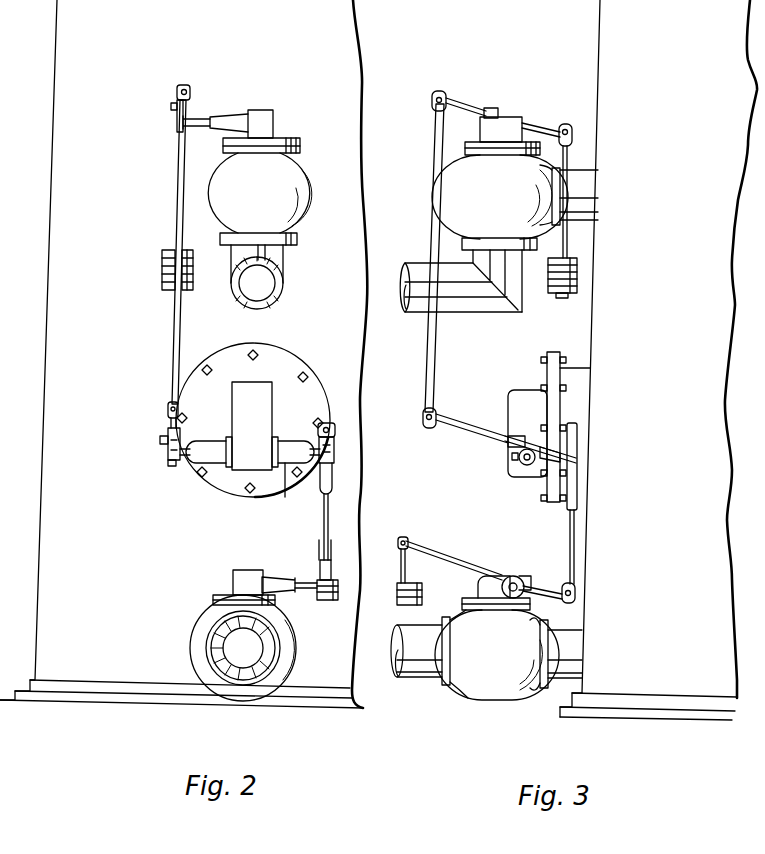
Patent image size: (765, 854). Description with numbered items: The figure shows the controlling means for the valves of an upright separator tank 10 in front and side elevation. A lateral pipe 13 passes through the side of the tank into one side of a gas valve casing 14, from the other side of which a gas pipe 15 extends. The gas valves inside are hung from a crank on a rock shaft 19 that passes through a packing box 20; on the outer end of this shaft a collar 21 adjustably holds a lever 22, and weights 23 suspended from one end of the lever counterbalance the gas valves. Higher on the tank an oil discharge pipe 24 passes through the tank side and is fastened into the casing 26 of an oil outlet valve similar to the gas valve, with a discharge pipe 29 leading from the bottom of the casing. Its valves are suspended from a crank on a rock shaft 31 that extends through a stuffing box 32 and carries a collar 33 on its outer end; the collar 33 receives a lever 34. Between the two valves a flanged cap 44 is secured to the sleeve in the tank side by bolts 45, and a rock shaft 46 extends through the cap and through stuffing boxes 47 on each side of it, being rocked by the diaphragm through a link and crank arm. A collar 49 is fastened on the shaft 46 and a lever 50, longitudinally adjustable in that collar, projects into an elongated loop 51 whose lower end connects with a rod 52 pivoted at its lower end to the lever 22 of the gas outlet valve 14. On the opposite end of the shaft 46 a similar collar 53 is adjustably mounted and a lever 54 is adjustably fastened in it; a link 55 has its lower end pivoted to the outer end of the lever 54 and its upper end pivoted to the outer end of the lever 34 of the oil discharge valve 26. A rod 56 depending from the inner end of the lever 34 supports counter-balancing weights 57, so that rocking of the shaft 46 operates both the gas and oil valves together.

In FIG. 2, the separator tank 10 is at (60, 322).
In FIG. 3, the lateral pipe 13 is at (562, 688).
In FIG. 2, the gas valve casing 14 is at (192, 648).
In FIG. 3, the gas valve casing 14 is at (482, 688).
In FIG. 2, the gas pipe 15 is at (273, 655).
In FIG. 3, the gas pipe 15 is at (407, 677).
In FIG. 2, the rock shaft 19 is at (300, 590).
In FIG. 3, the rock shaft 19 is at (556, 645).
In FIG. 2, the packing box 20 is at (283, 562).
In FIG. 3, the collar 21 is at (517, 577).
In FIG. 2, the lever 22 is at (318, 544).
In FIG. 3, the lever 22 is at (472, 543).
In FIG. 2, the weights 23 is at (338, 591).
In FIG. 3, the weights 23 is at (423, 592).
In FIG. 3, the oil discharge pipe 24 is at (580, 183).
In FIG. 2, the oil outlet valve casing 26 is at (292, 222).
In FIG. 3, the oil outlet valve casing 26 is at (470, 197).
In FIG. 2, the discharge pipe 29 is at (283, 287).
In FIG. 3, the discharge pipe 29 is at (465, 313).
In FIG. 2, the rock shaft 31 is at (200, 118).
In FIG. 2, the stuffing box 32 is at (227, 117).
In FIG. 2, the collar 33 is at (185, 132).
In FIG. 3, the collar 33 is at (489, 112).
In FIG. 2, the lever 34 is at (186, 88).
In FIG. 3, the lever 34 is at (540, 125).
In FIG. 2, the flanged cap 44 is at (268, 398).
In FIG. 3, the flanged cap 44 is at (527, 397).
In FIG. 2, the bolts 45 is at (292, 365).
In FIG. 3, the bolts 45 is at (547, 388).
In FIG. 2, the rock shaft 46 is at (190, 443).
In FIG. 3, the rock shaft 46 is at (517, 473).
In FIG. 2, the stuffing boxes 47 is at (215, 452).
In FIG. 2, the collar 49 is at (336, 455).
In FIG. 3, the collar 49 is at (524, 446).
In FIG. 2, the lever 50 is at (336, 433).
In FIG. 3, the lever 50 is at (553, 457).
In FIG. 2, the elongated loop 51 is at (334, 490).
In FIG. 3, the elongated loop 51 is at (577, 474).
In FIG. 2, the rod 52 is at (329, 529).
In FIG. 3, the rod 52 is at (575, 546).
In FIG. 2, the collar 53 is at (168, 452).
In FIG. 2, the lever 54 is at (170, 418).
In FIG. 3, the lever 54 is at (485, 403).
In FIG. 2, the link 55 is at (177, 205).
In FIG. 3, the link 55 is at (428, 345).
In FIG. 3, the rod 56 is at (568, 245).
In FIG. 2, the counter-balancing weights 57 is at (162, 270).
In FIG. 3, the counter-balancing weights 57 is at (578, 281).